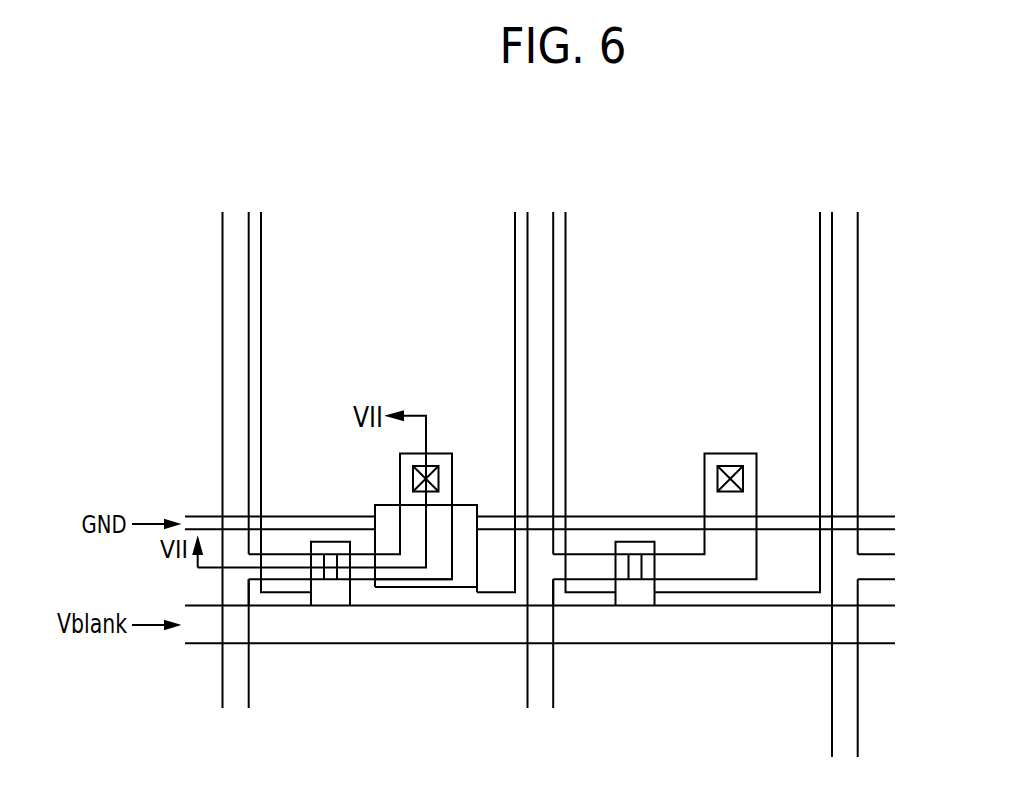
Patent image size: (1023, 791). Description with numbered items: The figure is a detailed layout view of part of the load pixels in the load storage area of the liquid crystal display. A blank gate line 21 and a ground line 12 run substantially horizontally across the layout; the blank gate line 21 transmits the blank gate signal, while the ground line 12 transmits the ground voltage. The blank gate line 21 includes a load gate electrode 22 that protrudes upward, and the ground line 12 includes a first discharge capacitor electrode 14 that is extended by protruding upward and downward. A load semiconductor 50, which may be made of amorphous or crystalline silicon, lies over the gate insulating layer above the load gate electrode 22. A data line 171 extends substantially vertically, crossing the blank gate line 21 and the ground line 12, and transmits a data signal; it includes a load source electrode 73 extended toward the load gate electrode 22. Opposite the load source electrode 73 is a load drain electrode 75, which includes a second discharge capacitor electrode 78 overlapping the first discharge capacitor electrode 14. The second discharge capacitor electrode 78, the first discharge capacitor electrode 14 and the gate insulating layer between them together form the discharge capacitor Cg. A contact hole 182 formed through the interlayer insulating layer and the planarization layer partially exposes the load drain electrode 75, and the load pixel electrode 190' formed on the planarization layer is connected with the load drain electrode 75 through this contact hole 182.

The ground line 12 is at (882, 514).
The first discharge capacitor electrode 14 is at (400, 588).
The blank gate line 21 is at (882, 606).
The load gate electrode 22 is at (329, 541).
The load semiconductor 50 is at (329, 582).
The load source electrode 73 is at (290, 582).
The load drain electrode 75 is at (362, 582).
The second discharge capacitor electrode 78 is at (452, 558).
The data line 171 is at (249, 343).
The contact hole 182 is at (433, 466).
The load pixel electrode 190' is at (227, 402).
The discharge capacitor Cg is at (402, 706).